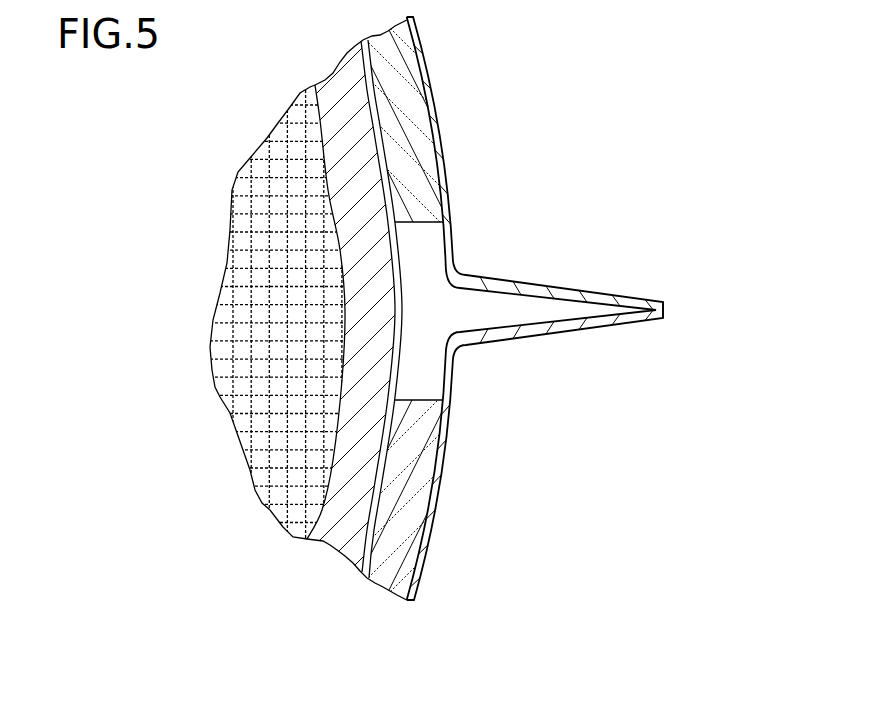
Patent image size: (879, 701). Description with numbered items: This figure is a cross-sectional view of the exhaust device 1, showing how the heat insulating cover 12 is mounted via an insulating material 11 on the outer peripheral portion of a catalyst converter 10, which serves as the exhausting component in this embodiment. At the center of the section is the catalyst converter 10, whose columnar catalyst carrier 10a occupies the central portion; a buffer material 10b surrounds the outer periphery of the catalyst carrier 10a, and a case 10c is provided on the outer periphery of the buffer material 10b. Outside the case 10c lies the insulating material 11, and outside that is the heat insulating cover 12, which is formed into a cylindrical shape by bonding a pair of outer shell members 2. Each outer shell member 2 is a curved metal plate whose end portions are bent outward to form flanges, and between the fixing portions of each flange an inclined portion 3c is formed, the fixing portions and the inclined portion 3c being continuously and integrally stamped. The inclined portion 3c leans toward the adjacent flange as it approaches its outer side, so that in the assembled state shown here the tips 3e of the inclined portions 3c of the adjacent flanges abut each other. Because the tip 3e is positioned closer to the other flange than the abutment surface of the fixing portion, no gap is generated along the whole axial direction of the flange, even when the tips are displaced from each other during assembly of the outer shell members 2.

The exhaust device 1 is at (592, 306).
The outer shell member 2 is at (433, 98).
The heat insulating cover 12 is at (424, 45).
The insulating material 11 is at (410, 180).
The inclined portion 3c is at (545, 286).
The tip 3e is at (663, 303).
The catalyst converter 10 is at (247, 367).
The catalyst carrier 10a is at (247, 291).
The buffer material 10b is at (350, 512).
The case 10c is at (376, 523).